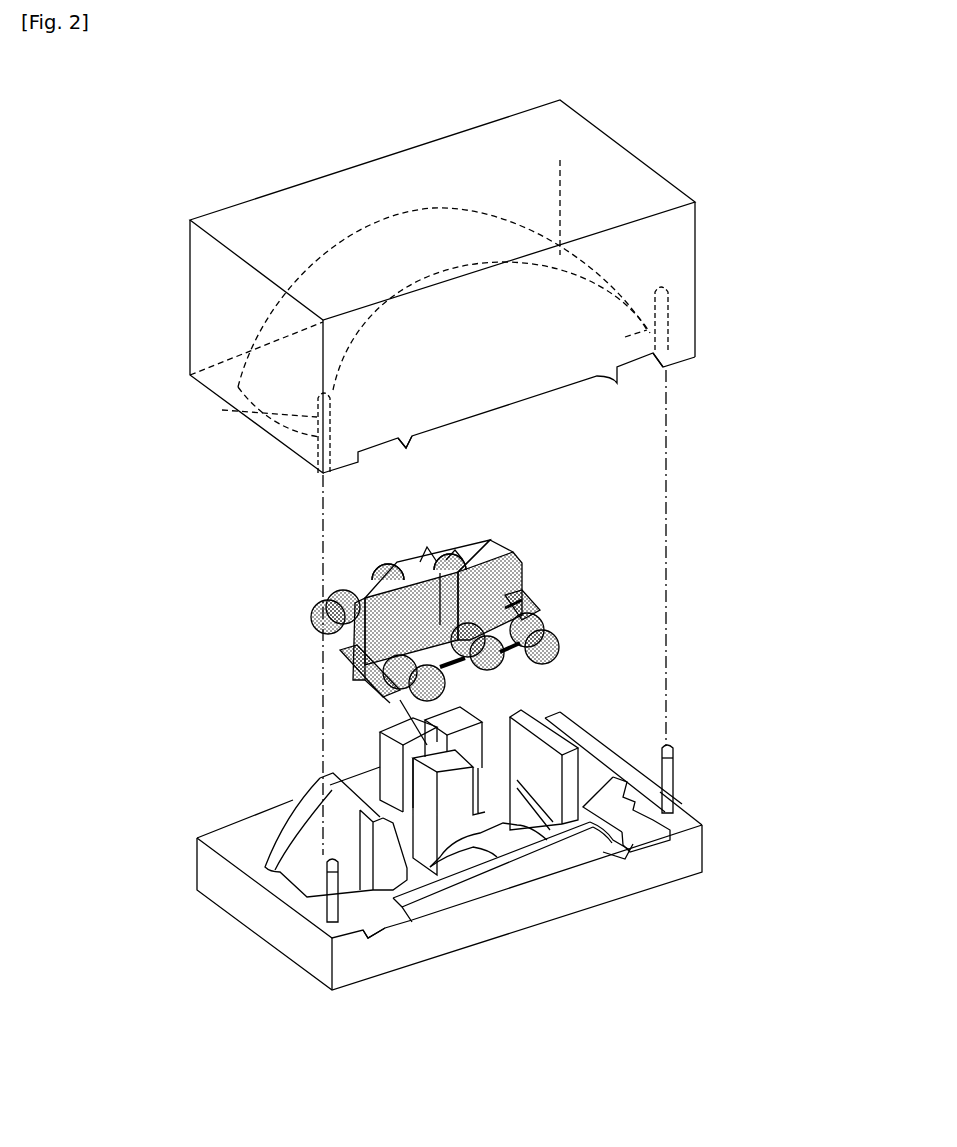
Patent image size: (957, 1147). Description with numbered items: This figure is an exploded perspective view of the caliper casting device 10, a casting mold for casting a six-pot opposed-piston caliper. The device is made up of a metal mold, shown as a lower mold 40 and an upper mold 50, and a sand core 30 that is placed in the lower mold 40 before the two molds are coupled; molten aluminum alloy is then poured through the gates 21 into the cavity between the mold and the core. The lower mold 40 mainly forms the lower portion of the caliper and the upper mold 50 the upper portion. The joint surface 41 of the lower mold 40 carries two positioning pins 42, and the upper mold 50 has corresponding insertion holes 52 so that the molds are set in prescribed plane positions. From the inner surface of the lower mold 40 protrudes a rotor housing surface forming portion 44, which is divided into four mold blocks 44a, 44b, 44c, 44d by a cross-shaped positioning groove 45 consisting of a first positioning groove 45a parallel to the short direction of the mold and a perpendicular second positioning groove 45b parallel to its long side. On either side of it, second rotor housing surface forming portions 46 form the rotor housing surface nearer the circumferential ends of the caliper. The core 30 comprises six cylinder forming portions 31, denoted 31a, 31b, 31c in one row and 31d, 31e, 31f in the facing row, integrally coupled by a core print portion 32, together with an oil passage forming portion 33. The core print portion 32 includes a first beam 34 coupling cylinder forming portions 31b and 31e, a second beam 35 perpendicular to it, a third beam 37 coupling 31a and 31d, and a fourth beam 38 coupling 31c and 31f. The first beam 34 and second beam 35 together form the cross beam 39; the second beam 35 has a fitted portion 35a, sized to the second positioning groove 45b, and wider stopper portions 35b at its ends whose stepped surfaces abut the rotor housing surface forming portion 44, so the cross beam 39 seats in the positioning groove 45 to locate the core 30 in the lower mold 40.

The caliper casting device 10 is at (730, 86).
The gate 21 is at (386, 455).
The core 30 is at (422, 618).
The cylinder forming portion 31 is at (448, 611).
The cylinder forming portion 31a is at (445, 675).
The cylinder forming portion 31b is at (517, 590).
The cylinder forming portion 31c is at (553, 638).
The cylinder forming portion 31d is at (323, 605).
The cylinder forming portion 31e is at (383, 563).
The cylinder forming portion 31f is at (458, 560).
The core print portion 32 is at (410, 558).
The oil passage forming portion 33 is at (540, 612).
The first beam 34 is at (450, 562).
The second beam 35 is at (437, 594).
The fitted portion 35a is at (378, 560).
The stopper portion 35b is at (513, 553).
The third beam 37 is at (333, 642).
The fourth beam 38 is at (540, 600).
The cross beam 39 is at (418, 594).
The lower mold 40 is at (478, 828).
The joint surface 41 is at (253, 837).
The positioning pin 42 is at (326, 912).
The rotor housing surface forming portion 44 is at (475, 771).
The mold block 44a is at (400, 735).
The mold block 44b is at (577, 737).
The mold block 44c is at (521, 730).
The mold block 44d is at (481, 712).
The positioning groove 45 is at (318, 692).
The first positioning groove 45a is at (390, 703).
The second positioning groove 45b is at (427, 745).
The second rotor housing surface forming portion 46 is at (272, 862).
The upper mold 50 is at (182, 275).
The insertion hole 52 is at (670, 306).